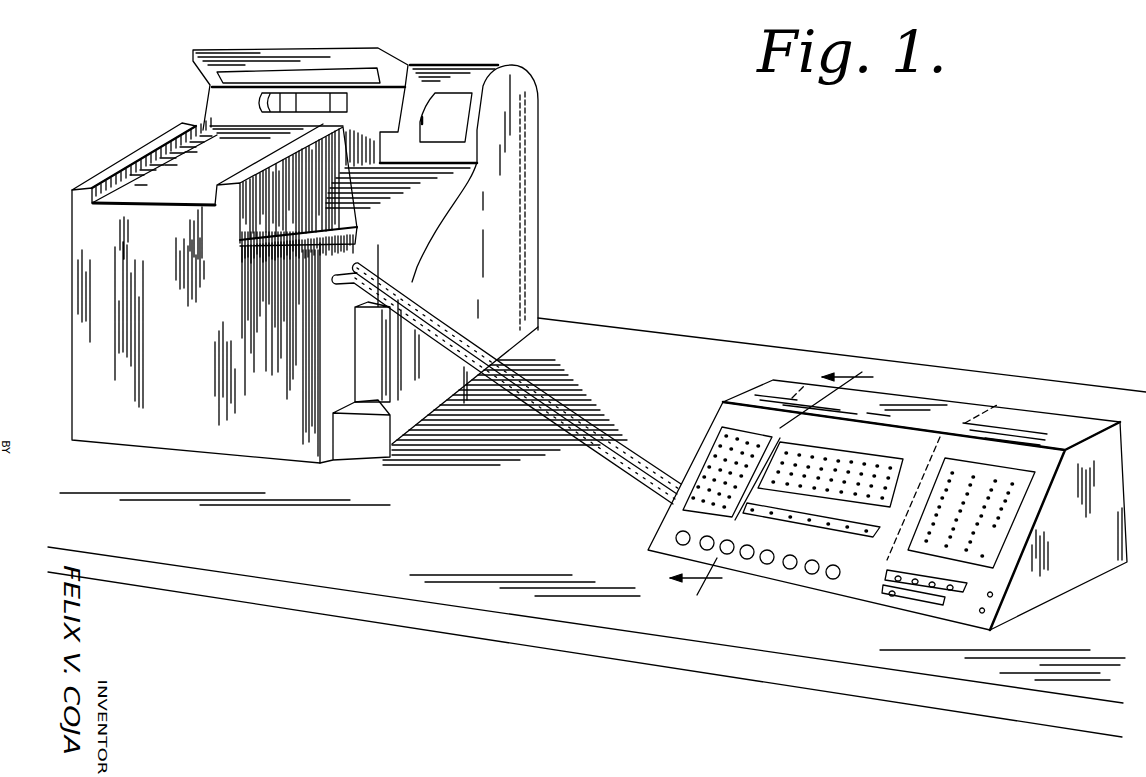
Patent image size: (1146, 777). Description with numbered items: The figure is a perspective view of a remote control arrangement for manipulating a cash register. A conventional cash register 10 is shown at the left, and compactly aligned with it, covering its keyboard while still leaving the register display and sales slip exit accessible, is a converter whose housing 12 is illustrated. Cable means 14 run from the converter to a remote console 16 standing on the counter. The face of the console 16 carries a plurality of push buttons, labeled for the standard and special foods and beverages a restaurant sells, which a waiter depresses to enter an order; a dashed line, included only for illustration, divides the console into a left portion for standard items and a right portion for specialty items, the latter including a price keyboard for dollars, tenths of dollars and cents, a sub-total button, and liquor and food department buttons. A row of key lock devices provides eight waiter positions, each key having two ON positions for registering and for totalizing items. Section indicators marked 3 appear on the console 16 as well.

The cash register 10 is at (538, 178).
The converter housing 12 is at (103, 277).
The cable means 14 is at (565, 400).
The remote console 16 is at (787, 393).
The section line for FIG. 3 is at (776, 486).